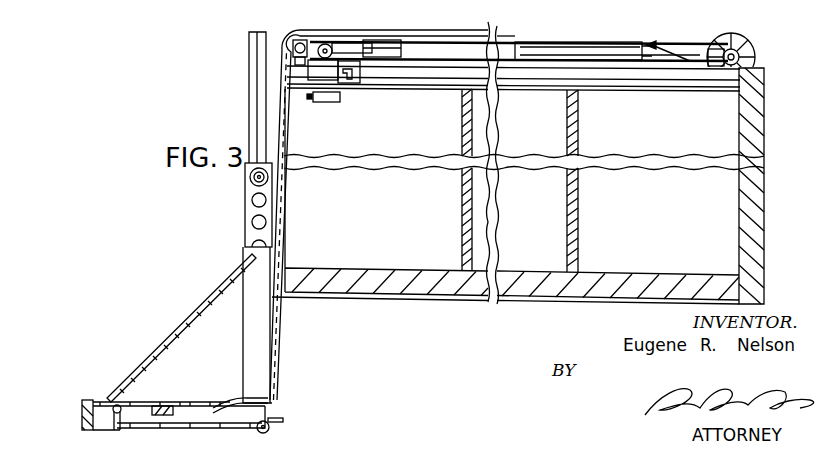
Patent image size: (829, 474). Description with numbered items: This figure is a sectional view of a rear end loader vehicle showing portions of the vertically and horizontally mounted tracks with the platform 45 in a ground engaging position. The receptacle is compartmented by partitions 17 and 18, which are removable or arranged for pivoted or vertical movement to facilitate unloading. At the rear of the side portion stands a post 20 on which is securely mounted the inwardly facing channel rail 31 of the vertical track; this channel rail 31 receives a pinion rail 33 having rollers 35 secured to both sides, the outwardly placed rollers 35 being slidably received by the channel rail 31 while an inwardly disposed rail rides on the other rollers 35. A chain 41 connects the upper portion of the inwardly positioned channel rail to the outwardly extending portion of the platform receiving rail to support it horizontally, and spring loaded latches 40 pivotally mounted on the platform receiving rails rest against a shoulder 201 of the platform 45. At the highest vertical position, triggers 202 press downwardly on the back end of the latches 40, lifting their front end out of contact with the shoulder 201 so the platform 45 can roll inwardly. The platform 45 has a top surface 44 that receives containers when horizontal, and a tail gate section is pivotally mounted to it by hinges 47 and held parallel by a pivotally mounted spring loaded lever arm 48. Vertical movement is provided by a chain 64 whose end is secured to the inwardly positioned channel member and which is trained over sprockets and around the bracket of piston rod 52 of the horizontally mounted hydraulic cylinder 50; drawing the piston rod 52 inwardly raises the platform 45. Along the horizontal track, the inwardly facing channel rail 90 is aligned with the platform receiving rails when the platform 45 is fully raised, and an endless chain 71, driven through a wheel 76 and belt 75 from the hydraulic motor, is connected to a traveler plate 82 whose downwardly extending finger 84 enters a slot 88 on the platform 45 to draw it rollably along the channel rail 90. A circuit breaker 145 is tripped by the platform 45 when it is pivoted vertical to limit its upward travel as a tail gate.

The partition 17 is at (467, 122).
The partition 18 is at (580, 144).
The post 20 is at (283, 100).
The channel rail 31 is at (257, 76).
The pinion rail 33 is at (248, 213).
The rollers 35 is at (250, 179).
The latches 40 is at (240, 398).
The chain 41 is at (165, 338).
The top surface 44 is at (193, 401).
The platform 45 is at (82, 404).
The hinges 47 is at (270, 429).
The spring loaded lever arm 48 is at (116, 413).
The hydraulic cylinder 50 is at (560, 42).
The piston rod 52 is at (490, 40).
The chain 64 is at (382, 39).
The endless chain 71 is at (698, 46).
The belt 75 is at (760, 64).
The wheel 76 is at (740, 36).
The traveler plate 82 is at (361, 70).
The finger 84 is at (347, 81).
The slot 88 is at (283, 420).
The channel rail 90 is at (655, 81).
The circuit breaker 145 is at (326, 103).
The shoulder 201 is at (203, 401).
The triggers 202 is at (297, 62).